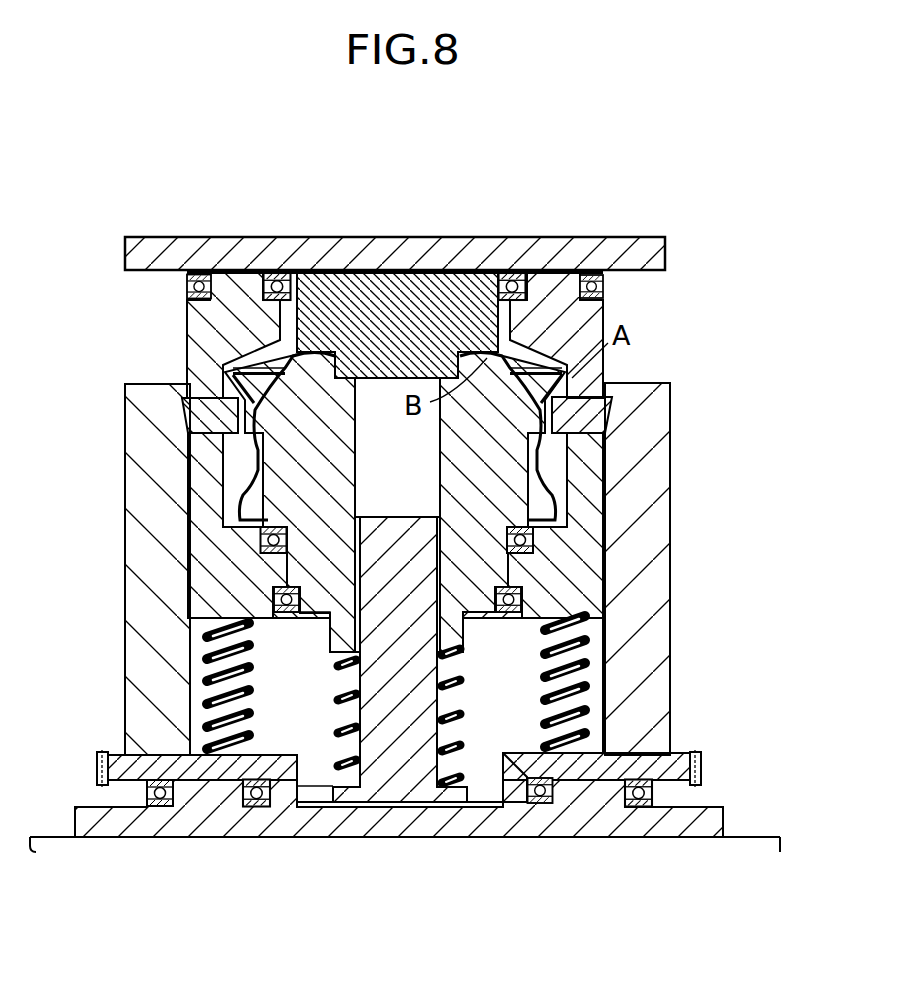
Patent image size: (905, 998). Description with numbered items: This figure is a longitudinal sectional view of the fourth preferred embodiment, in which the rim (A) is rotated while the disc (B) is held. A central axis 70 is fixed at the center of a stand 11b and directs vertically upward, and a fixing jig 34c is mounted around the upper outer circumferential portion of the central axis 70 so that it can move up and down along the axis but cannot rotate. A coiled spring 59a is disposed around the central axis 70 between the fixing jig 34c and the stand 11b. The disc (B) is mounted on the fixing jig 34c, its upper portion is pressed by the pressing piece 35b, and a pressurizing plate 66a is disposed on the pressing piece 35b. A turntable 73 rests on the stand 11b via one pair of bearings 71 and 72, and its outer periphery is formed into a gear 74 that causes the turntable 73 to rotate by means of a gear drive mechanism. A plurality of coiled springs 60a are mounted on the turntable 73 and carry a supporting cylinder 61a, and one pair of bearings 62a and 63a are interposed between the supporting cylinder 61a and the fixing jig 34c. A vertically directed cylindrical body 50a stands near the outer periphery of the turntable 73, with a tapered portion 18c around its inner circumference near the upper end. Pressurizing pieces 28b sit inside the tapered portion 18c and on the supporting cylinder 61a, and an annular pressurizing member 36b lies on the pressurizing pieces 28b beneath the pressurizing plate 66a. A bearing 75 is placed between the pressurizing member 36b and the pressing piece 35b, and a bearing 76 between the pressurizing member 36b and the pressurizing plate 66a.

The pressurizing plate 66a is at (375, 218).
The pressing piece 35b is at (435, 270).
The bearing 75 is at (500, 272).
The bearing 76 is at (587, 268).
The annular pressurizing member 36b is at (607, 365).
The pressurizing pieces 28b is at (610, 417).
The tapered portion 18c is at (607, 458).
The supporting cylinder 61a is at (605, 522).
The bearing 63a is at (533, 542).
The cylindrical body 50a is at (672, 606).
The fixing jig 34c is at (352, 497).
The bearing 62a is at (512, 620).
The coiled springs 60a is at (548, 703).
The coiled spring 59a is at (457, 720).
The turntable 73 is at (688, 750).
The gear 74 is at (700, 755).
The stand 11b is at (724, 812).
The central axis 70 is at (447, 805).
The bearing 71 is at (550, 806).
The bearing 72 is at (622, 810).